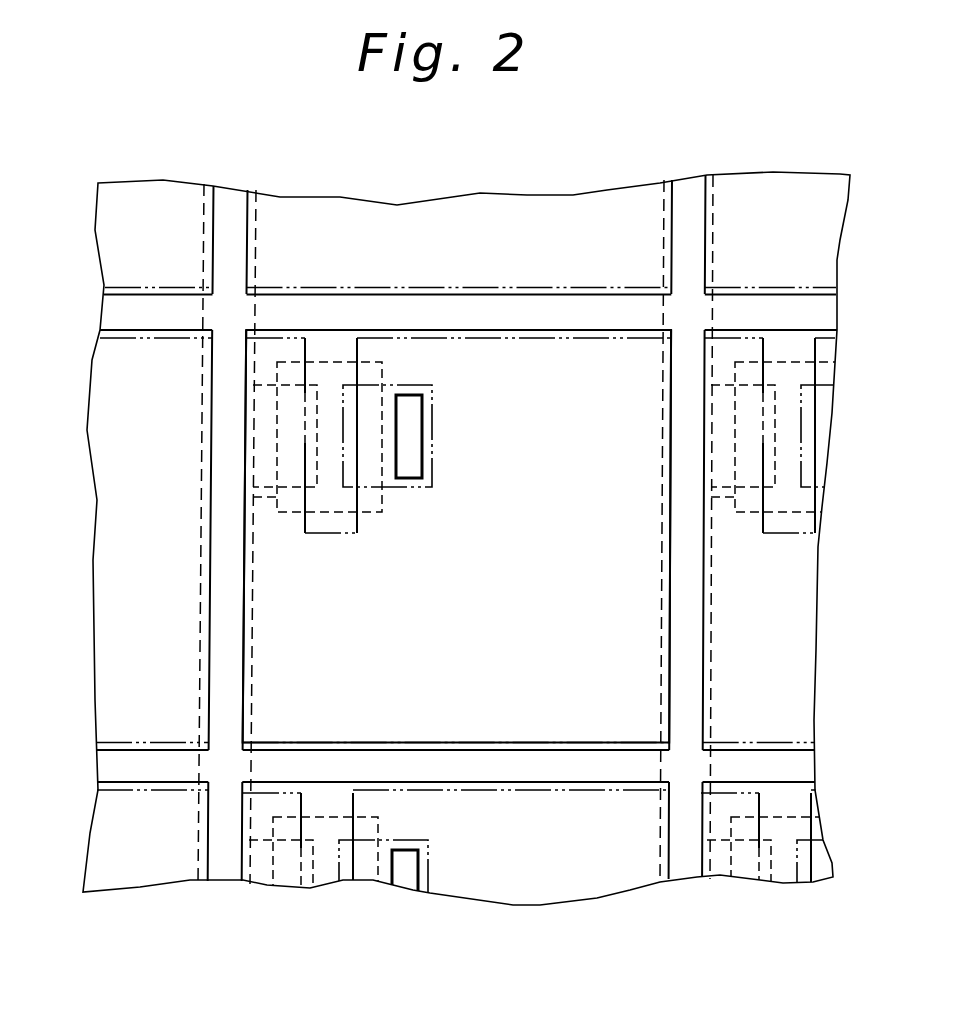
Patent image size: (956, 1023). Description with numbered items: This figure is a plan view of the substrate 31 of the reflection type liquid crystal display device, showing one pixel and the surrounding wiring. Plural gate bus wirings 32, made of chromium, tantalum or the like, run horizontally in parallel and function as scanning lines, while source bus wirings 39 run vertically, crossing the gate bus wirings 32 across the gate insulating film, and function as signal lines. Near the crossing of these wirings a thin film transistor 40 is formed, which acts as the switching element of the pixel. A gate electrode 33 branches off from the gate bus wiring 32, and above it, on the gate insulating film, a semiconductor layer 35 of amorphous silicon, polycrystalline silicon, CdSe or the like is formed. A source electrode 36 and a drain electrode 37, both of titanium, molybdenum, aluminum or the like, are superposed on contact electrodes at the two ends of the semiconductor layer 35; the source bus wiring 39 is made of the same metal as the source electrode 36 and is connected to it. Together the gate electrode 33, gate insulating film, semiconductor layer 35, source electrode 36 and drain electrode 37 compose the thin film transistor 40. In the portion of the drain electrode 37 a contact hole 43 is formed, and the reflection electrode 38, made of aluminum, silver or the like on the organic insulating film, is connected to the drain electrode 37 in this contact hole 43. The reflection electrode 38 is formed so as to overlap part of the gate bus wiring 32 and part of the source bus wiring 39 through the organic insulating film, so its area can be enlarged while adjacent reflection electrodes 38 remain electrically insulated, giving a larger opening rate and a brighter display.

The substrate 31 is at (466, 584).
The gate bus wiring 32 is at (433, 547).
The gate electrode 33 is at (258, 444).
The semiconductor layer 35 is at (238, 445).
The source electrode 36 is at (270, 437).
The drain electrode 37 is at (296, 435).
The reflection electrode 38 is at (351, 536).
The source bus wiring 39 is at (455, 489).
The thin film transistor 40 is at (265, 444).
The contact hole 43 is at (456, 431).